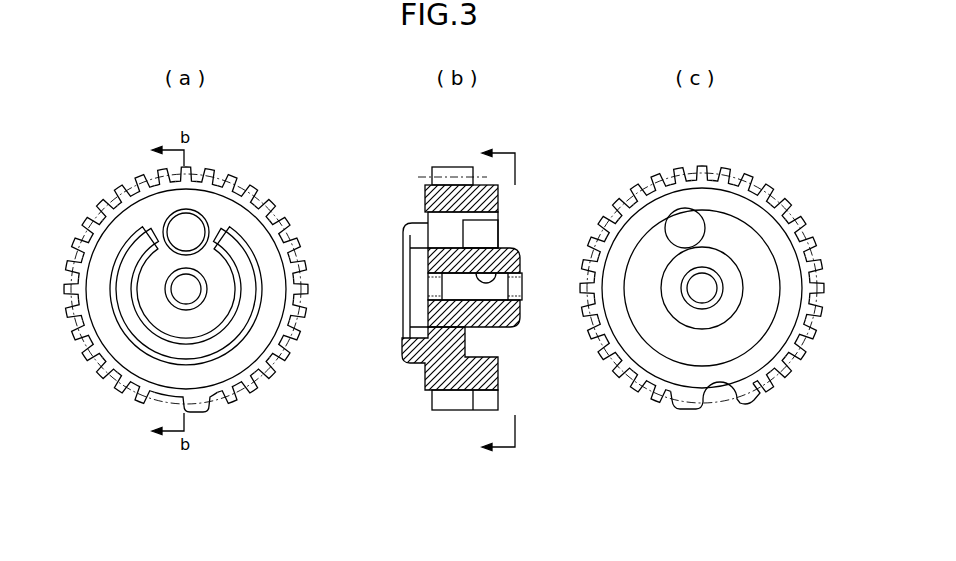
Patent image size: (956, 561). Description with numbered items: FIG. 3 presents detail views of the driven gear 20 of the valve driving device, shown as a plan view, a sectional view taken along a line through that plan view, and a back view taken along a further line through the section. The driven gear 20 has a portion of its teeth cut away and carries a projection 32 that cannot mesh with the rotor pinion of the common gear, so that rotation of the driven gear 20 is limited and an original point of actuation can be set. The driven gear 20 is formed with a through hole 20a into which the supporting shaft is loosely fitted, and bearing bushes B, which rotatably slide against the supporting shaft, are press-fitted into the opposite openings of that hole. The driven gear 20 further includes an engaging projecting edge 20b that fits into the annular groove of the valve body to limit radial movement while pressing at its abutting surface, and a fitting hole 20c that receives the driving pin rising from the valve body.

The driven gear 20 is at (432, 178).
The through hole 20a is at (168, 286).
The engaging projecting edge 20b is at (140, 348).
The fitting hole 20c is at (176, 221).
The bearing bush B is at (432, 270).
The projection 32 is at (487, 411).